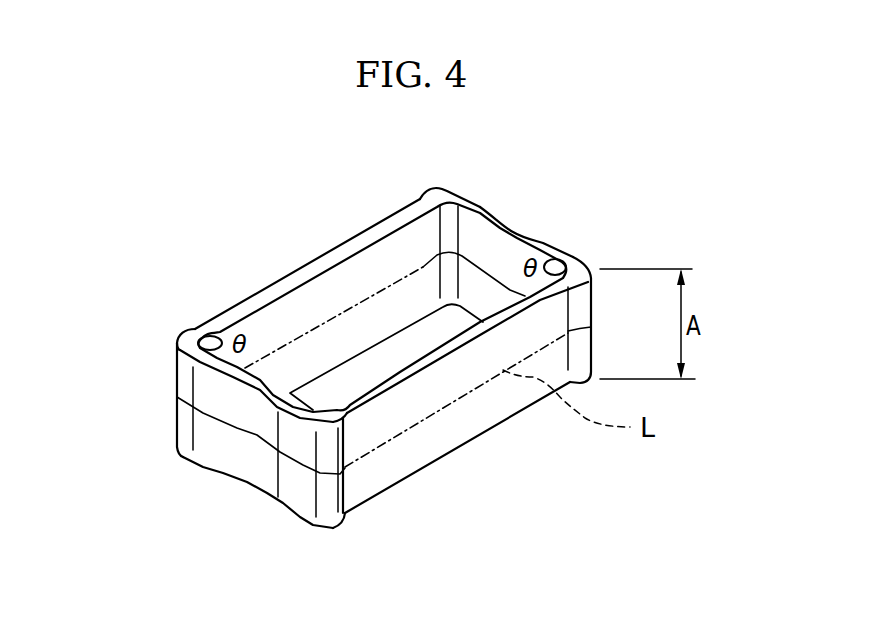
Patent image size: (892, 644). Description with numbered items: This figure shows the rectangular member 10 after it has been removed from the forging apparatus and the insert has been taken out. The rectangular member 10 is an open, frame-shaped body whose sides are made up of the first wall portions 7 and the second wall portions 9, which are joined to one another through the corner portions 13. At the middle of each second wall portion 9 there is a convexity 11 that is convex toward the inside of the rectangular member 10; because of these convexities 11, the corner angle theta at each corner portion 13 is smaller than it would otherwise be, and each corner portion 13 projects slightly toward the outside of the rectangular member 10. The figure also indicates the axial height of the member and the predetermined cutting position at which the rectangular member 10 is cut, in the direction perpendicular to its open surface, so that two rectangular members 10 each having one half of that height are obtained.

The first wall portion 7 is at (334, 258).
The second wall portion 9 is at (572, 251).
The rectangular member 10 is at (587, 213).
The convexity 11 is at (517, 233).
The corner portion 13 is at (450, 197).